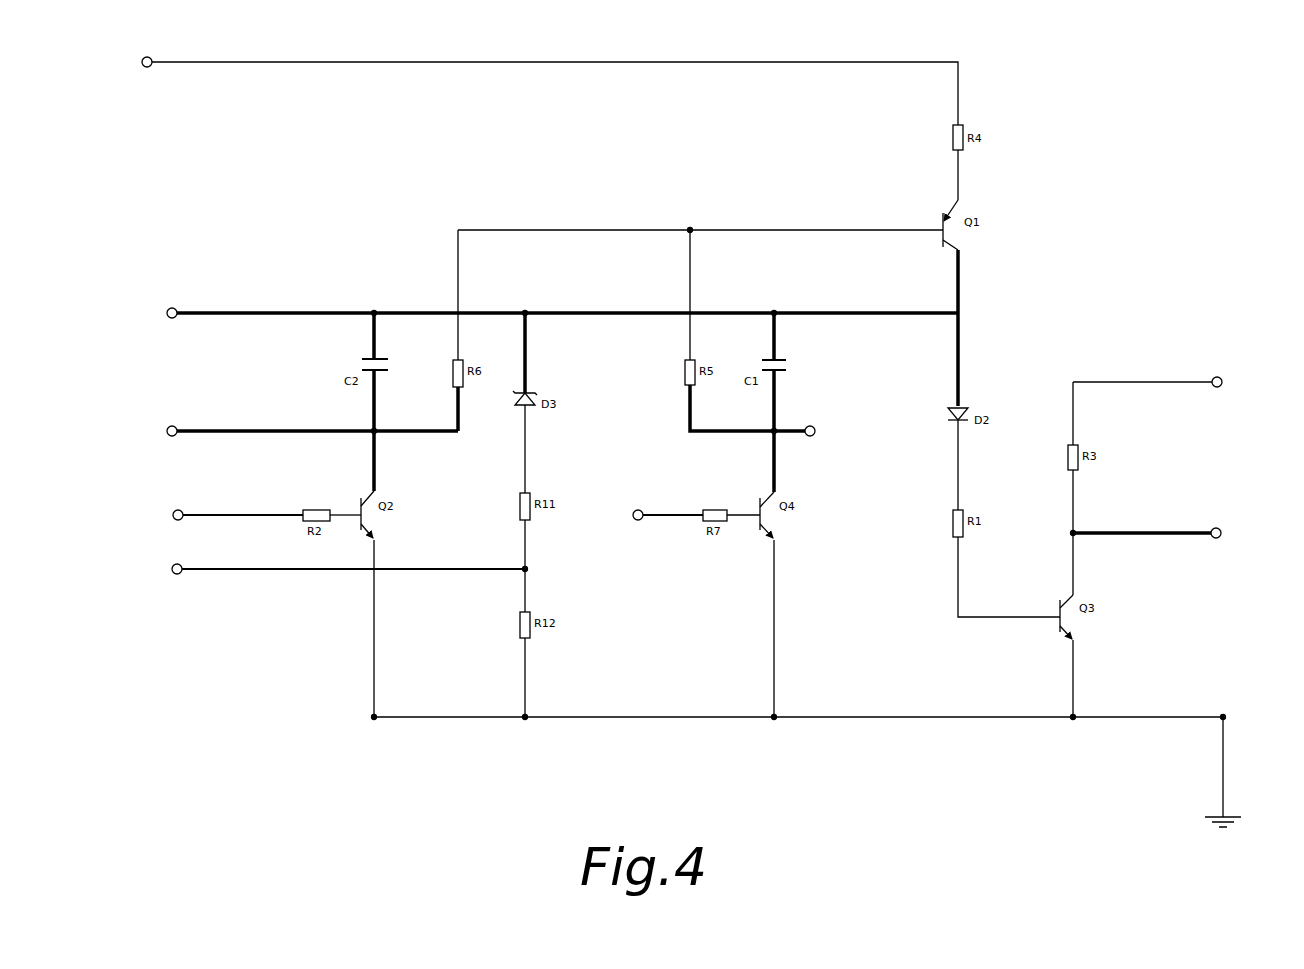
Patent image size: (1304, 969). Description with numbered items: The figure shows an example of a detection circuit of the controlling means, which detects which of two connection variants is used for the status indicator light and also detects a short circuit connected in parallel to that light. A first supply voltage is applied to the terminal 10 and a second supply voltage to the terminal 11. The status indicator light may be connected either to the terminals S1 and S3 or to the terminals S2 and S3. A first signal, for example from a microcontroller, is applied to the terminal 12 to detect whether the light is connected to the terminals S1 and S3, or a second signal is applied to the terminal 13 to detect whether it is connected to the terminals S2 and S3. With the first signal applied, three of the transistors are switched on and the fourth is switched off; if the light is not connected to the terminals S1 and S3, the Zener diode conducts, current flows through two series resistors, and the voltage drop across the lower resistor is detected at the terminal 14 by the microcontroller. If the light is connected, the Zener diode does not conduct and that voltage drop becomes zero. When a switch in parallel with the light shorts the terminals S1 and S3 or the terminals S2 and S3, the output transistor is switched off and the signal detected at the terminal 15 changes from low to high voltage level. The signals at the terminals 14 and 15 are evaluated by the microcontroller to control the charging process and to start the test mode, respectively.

The terminal 10 is at (142, 62).
The terminal 11 is at (1223, 382).
The terminal 12 is at (162, 516).
The terminal 13 is at (633, 516).
The terminal 14 is at (162, 570).
The terminal 15 is at (1222, 533).
The terminal S1 is at (158, 432).
The terminal S2 is at (817, 432).
The terminal S3 is at (167, 314).